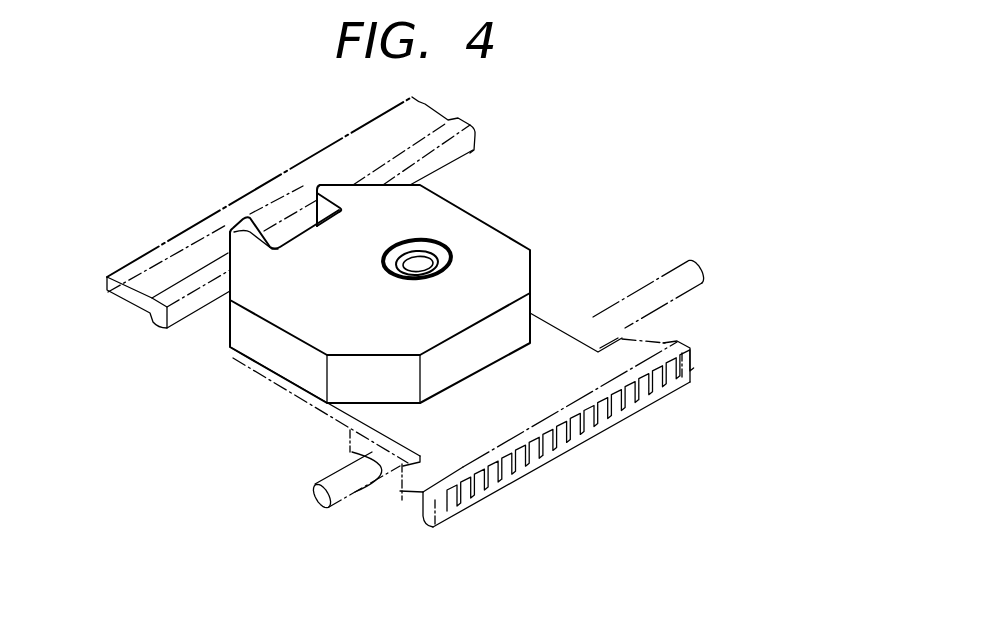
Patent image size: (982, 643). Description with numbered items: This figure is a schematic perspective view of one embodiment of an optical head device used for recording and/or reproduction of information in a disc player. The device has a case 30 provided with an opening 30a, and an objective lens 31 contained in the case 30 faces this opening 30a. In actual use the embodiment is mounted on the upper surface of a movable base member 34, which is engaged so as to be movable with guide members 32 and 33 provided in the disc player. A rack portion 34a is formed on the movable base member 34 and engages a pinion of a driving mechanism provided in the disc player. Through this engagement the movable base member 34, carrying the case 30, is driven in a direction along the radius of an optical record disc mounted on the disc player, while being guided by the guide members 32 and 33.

The case 30 is at (503, 245).
The opening 30a is at (385, 263).
The objective lens 31 is at (417, 265).
The guide member 32 is at (663, 284).
The guide member 33 is at (187, 287).
The movable base member 34 is at (557, 342).
The rack portion 34a is at (630, 413).